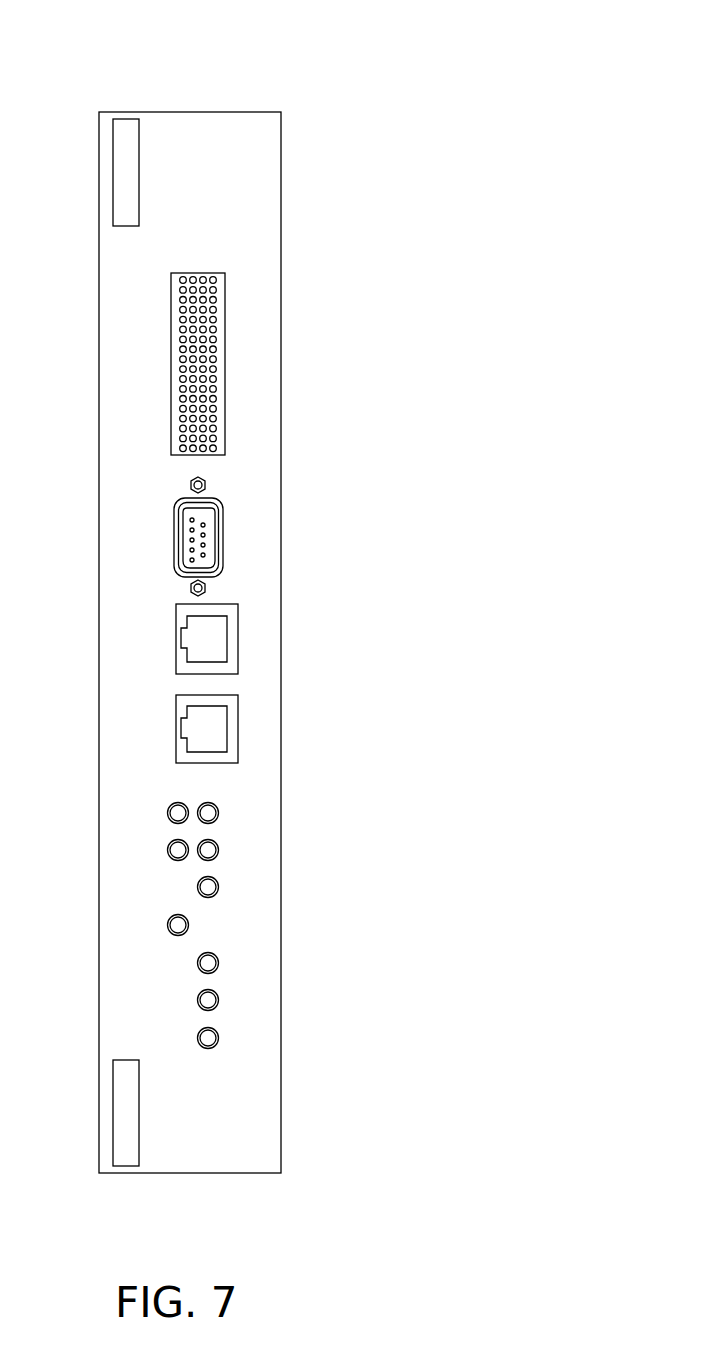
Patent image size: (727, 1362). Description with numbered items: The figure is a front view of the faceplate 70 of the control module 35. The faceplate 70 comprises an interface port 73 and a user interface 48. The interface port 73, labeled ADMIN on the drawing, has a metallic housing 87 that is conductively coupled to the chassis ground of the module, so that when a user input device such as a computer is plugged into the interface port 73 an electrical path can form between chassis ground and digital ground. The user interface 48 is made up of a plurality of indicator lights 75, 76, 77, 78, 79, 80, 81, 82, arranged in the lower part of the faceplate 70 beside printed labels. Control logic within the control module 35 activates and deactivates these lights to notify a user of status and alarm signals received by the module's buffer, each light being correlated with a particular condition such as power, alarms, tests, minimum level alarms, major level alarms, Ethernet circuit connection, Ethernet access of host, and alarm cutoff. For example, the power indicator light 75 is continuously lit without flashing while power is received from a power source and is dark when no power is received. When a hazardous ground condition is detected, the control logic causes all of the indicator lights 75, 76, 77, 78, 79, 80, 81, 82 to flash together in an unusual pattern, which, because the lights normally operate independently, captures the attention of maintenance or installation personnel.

The control module 35 is at (120, 61).
The faceplate 70 is at (195, 137).
The user interface 48 is at (182, 1078).
The interface port 73 is at (198, 527).
The metallic housing 87 is at (212, 575).
The indicator light 81 is at (168, 807).
The indicator light 82 is at (168, 852).
The indicator light 80 is at (210, 803).
The indicator light 79 is at (216, 843).
The indicator light 78 is at (216, 893).
The indicator light 77 is at (218, 972).
The indicator light 76 is at (218, 1008).
The power indicator light 75 is at (210, 1048).